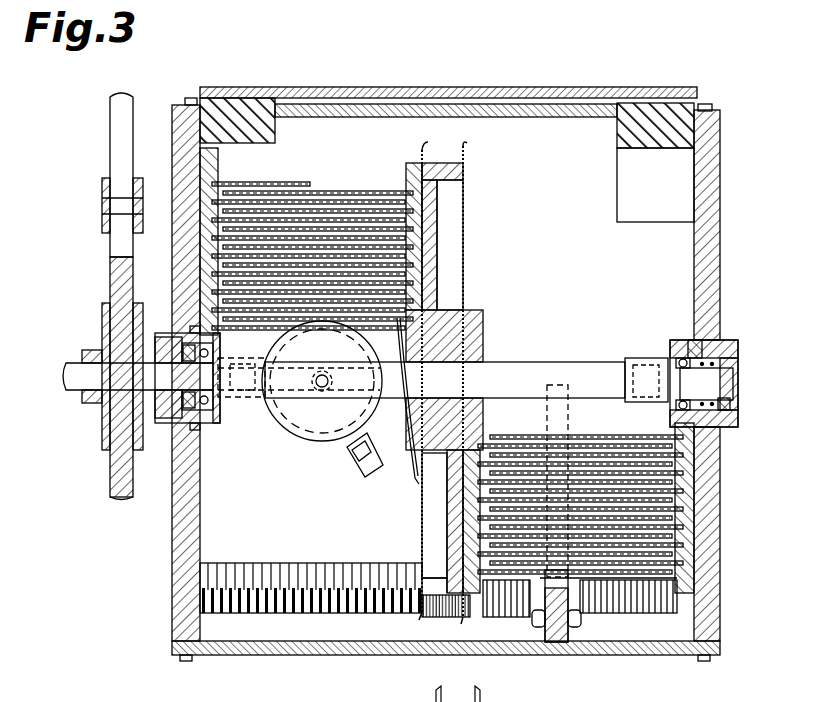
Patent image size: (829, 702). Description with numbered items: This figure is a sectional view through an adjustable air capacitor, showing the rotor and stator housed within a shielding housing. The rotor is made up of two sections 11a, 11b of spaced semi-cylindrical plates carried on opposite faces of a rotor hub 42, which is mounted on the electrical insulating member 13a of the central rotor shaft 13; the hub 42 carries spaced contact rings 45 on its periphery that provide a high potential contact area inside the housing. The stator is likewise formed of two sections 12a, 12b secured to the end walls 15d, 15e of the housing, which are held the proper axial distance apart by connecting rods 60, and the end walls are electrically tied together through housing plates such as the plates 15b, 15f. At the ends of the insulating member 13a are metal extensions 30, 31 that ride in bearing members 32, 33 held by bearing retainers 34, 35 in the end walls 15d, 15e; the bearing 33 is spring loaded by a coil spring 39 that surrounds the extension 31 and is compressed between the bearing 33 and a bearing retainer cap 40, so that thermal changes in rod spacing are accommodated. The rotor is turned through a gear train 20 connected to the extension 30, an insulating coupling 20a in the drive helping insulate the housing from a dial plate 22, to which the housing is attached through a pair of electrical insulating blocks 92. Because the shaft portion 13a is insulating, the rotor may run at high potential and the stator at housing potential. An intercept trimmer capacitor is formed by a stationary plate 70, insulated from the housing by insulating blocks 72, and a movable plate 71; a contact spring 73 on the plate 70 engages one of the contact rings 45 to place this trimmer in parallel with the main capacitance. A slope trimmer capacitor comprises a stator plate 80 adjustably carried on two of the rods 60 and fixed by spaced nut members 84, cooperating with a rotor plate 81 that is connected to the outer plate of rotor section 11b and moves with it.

The housing plate 15f is at (185, 103).
The electrical insulating blocks 92 is at (245, 112).
The dial plate 22 is at (425, 88).
The contact rings 45 is at (421, 150).
The rotor hub 42 is at (450, 165).
The stator section 12a is at (216, 177).
The rotor section 11a is at (404, 192).
The insulating coupling 20a is at (103, 208).
The gear train 20 is at (87, 257).
The shaft extension 30 is at (72, 373).
The bearing retainer 34 is at (162, 333).
The bearing member 32 is at (215, 413).
The insulating blocks 72 is at (236, 392).
The stationary plate 70 is at (283, 424).
The movable plate 71 is at (322, 402).
The contact spring 73 is at (391, 410).
The electrical insulating member 13a is at (503, 365).
The rotor shaft 13 is at (600, 389).
The rotor section 11b is at (482, 436).
The stator section 12b is at (678, 442).
The end wall 15e is at (718, 238).
The bearing retainer 35 is at (690, 340).
The bearing member 33 is at (676, 352).
The bearing retainer cap 40 is at (738, 354).
The shaft extension 31 is at (717, 386).
The coil spring 39 is at (738, 412).
The end wall 15d is at (178, 562).
The connecting rods 60 is at (276, 566).
The housing plate 15b is at (300, 656).
The rotor plate 81 is at (505, 612).
The nut members 84 is at (580, 622).
The stator plate 80 is at (552, 641).